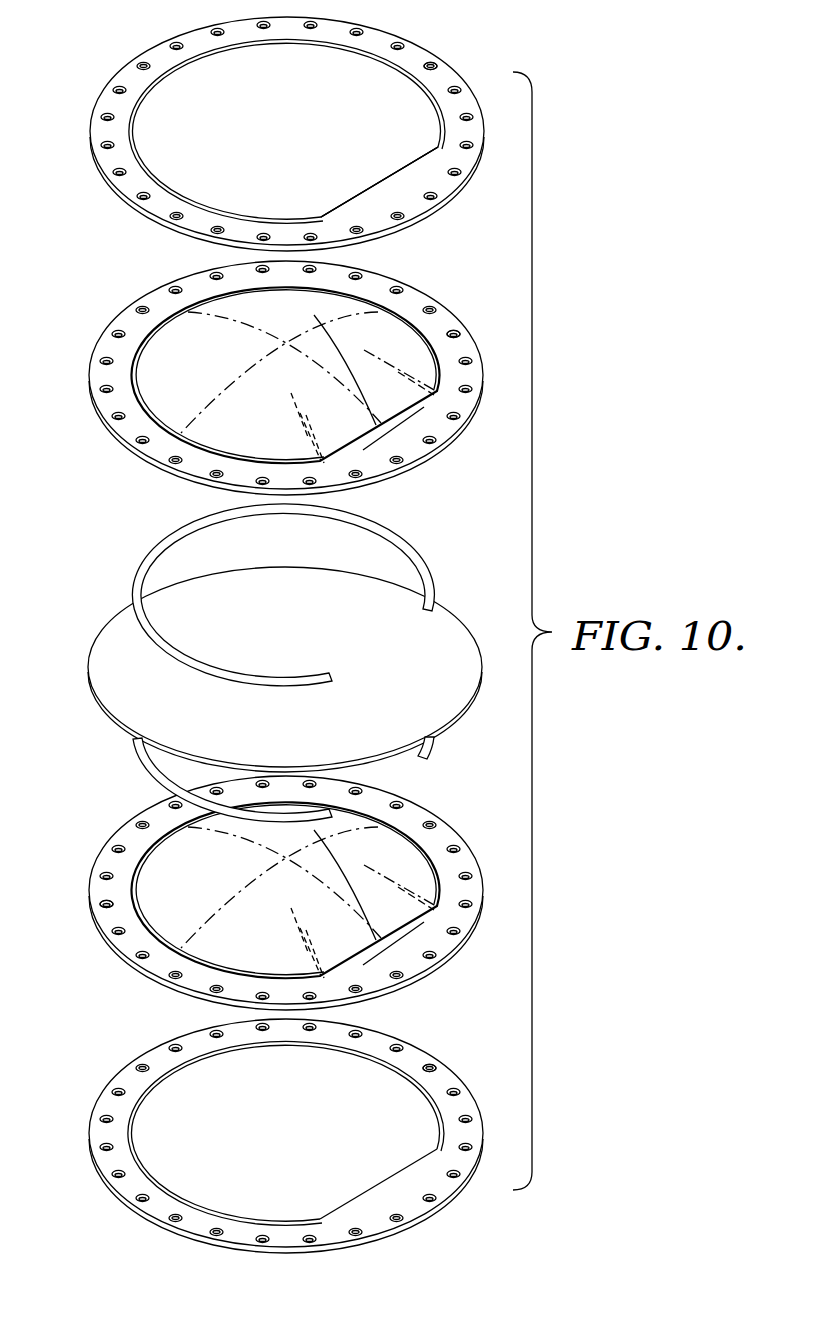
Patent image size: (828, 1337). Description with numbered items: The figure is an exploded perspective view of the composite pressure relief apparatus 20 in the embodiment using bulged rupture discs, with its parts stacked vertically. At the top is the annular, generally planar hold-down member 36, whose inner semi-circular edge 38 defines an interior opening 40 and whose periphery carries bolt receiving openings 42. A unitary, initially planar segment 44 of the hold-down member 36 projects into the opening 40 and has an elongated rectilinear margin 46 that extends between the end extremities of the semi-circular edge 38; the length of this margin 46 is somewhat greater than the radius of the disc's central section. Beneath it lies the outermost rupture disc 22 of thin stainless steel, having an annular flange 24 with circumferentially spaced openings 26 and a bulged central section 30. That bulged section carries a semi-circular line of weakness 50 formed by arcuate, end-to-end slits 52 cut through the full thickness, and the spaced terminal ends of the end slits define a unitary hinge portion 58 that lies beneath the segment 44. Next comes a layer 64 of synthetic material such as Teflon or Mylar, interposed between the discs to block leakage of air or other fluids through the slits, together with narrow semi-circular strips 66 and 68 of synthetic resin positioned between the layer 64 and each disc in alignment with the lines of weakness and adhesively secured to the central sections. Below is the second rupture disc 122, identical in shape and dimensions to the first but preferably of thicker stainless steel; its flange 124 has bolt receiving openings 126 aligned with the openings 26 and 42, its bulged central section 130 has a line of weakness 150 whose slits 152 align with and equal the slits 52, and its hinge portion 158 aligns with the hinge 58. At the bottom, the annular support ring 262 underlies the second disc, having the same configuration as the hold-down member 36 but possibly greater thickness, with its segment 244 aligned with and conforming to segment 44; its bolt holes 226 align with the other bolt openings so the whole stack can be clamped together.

The composite pressure relief apparatus 20 is at (572, 470).
The rupture disc 22 is at (260, 373).
The annular flange 24 is at (378, 285).
The openings 26 is at (455, 332).
The central section 30 is at (308, 369).
The hold-down member 36 is at (281, 134).
The inner semi-circular edge 38 is at (208, 57).
The interior opening 40 is at (353, 58).
The bolt receiving openings 42 is at (430, 60).
The segment 44 is at (408, 177).
The rectilinear margin 46 is at (365, 183).
The line of weakness 50 is at (167, 407).
The slits 52 is at (277, 460).
The hinge portion 58 is at (392, 427).
The layer 64 is at (103, 647).
The semi-circular strip 66 is at (408, 543).
The semi-circular strip 68 is at (145, 762).
The second rupture disc 122 is at (271, 893).
The flange 124 is at (443, 833).
The bolt receiving openings 126 is at (103, 897).
The central section 130 is at (308, 902).
The line of weakness 150 is at (140, 930).
The slits 152 is at (142, 888).
The hinge portion 158 is at (388, 943).
The bolt hole 226 is at (433, 1065).
The segment 244 is at (387, 1188).
The annular support ring 262 is at (266, 1136).